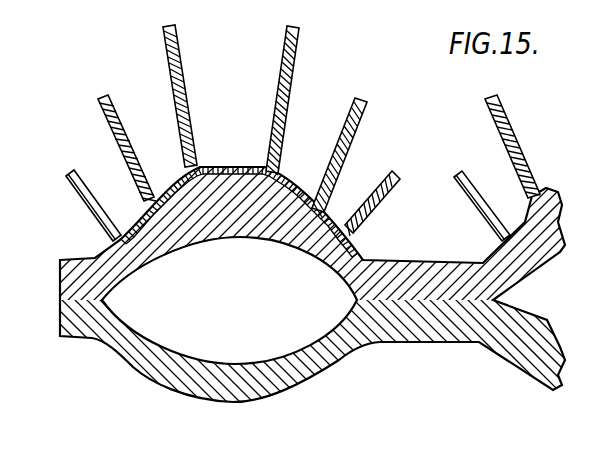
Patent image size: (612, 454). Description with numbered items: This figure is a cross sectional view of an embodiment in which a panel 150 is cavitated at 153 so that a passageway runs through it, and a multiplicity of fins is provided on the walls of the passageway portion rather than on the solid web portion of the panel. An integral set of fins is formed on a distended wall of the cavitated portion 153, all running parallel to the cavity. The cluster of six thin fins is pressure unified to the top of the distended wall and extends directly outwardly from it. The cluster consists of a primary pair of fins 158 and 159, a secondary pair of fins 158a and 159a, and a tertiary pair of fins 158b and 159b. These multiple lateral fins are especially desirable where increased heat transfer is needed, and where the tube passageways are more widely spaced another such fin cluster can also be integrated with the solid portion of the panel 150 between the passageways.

The panel 150 is at (409, 361).
The cavitated portion 153 is at (236, 352).
The primary fin 158 is at (80, 197).
The secondary fin 158a is at (499, 131).
The tertiary fin 158b is at (165, 38).
The primary fin 159 is at (384, 196).
The secondary fin 159a is at (360, 120).
The tertiary fin 159b is at (298, 50).